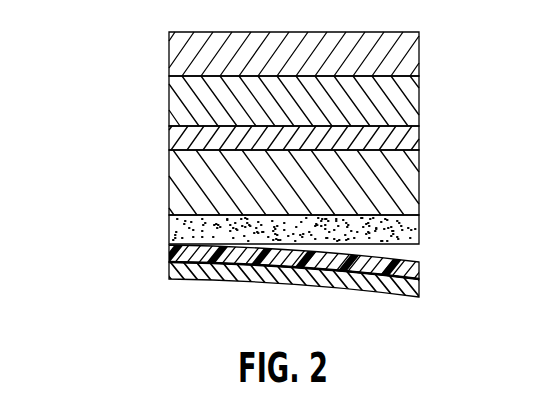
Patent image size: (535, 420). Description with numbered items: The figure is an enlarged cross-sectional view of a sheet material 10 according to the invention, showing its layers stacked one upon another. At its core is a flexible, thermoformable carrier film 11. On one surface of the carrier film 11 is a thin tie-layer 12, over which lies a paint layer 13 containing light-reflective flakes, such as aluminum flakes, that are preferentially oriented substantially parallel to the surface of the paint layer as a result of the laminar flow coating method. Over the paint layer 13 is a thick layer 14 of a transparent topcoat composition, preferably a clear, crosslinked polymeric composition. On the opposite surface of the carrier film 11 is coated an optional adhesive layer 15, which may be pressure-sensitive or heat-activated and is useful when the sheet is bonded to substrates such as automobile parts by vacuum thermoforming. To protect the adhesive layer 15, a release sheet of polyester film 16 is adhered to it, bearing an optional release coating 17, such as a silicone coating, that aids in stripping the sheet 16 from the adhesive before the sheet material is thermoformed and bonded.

The sheet material 10 is at (158, 153).
The carrier film 11 is at (419, 184).
The tie-layer 12 is at (419, 138).
The paint layer 13 is at (419, 101).
The layer of transparent topcoat composition 14 is at (419, 50).
The adhesive layer 15 is at (419, 231).
The release sheet of polyester film 16 is at (410, 297).
The release coating 17 is at (420, 263).